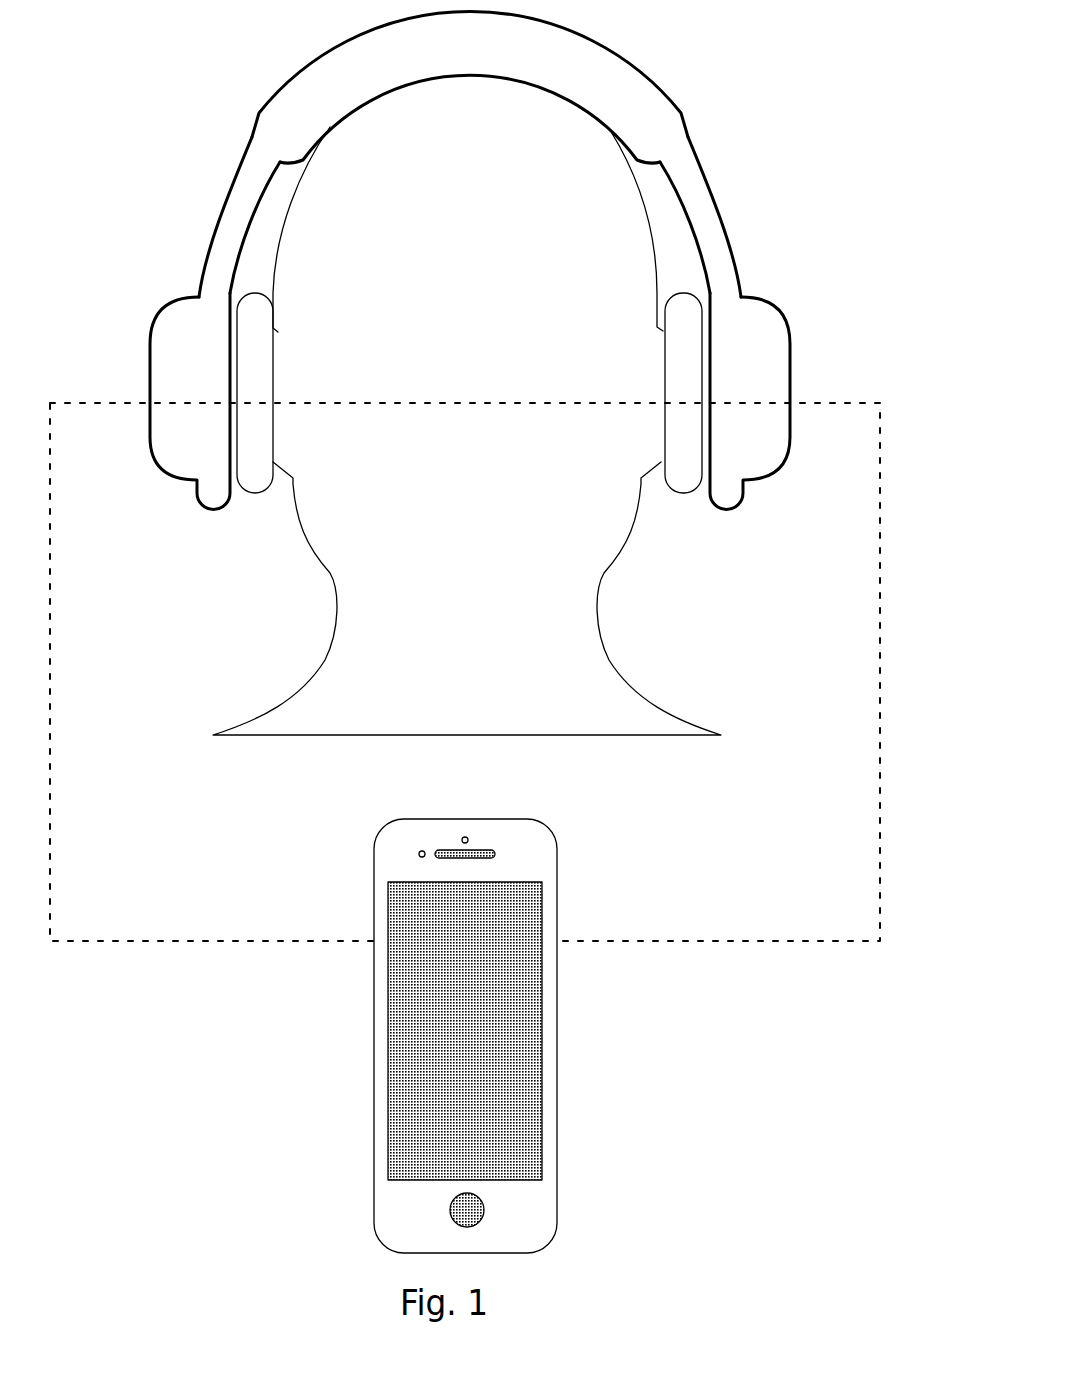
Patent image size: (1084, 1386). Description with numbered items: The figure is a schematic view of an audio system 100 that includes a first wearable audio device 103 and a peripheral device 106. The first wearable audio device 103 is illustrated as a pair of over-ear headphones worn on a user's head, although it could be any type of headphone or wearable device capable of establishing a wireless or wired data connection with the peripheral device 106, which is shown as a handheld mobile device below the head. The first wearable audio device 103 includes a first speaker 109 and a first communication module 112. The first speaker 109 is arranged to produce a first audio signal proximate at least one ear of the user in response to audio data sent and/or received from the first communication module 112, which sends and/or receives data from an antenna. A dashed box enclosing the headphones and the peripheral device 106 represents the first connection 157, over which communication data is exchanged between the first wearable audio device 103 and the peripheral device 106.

The audio system 100 is at (468, 260).
The first wearable audio device 103 is at (190, 296).
The first speaker 109 is at (712, 370).
The first communication module 112 is at (135, 368).
The first connection 157 is at (833, 403).
The peripheral device 106 is at (557, 862).